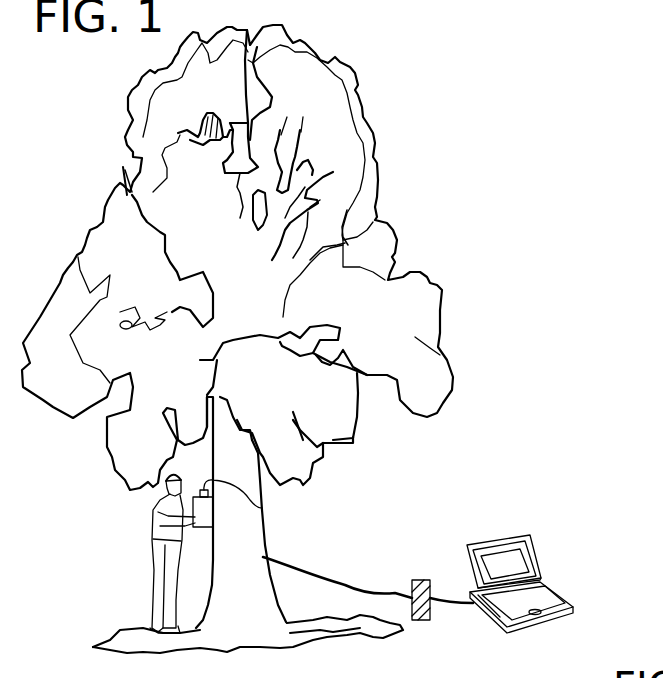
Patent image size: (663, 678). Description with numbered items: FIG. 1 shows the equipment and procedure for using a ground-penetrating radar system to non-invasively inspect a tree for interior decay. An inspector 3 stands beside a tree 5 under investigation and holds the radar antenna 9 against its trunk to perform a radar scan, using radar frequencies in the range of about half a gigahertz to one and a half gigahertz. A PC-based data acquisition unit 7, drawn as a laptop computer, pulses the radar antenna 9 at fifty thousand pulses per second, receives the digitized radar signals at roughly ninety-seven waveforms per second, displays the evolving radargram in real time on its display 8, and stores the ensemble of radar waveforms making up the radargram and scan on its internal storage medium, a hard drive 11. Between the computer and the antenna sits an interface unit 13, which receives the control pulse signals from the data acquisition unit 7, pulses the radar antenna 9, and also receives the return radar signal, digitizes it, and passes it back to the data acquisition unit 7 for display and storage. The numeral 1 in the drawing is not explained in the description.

The tree 1 is at (383, 496).
The inspector 3 is at (152, 568).
The tree 5 is at (266, 538).
The PC-based data acquisition unit 7 is at (522, 514).
The display 8 is at (507, 537).
The radar antenna 9 is at (260, 508).
The internal storage medium (hard drive) 11 is at (557, 590).
The interface unit 13 is at (422, 620).